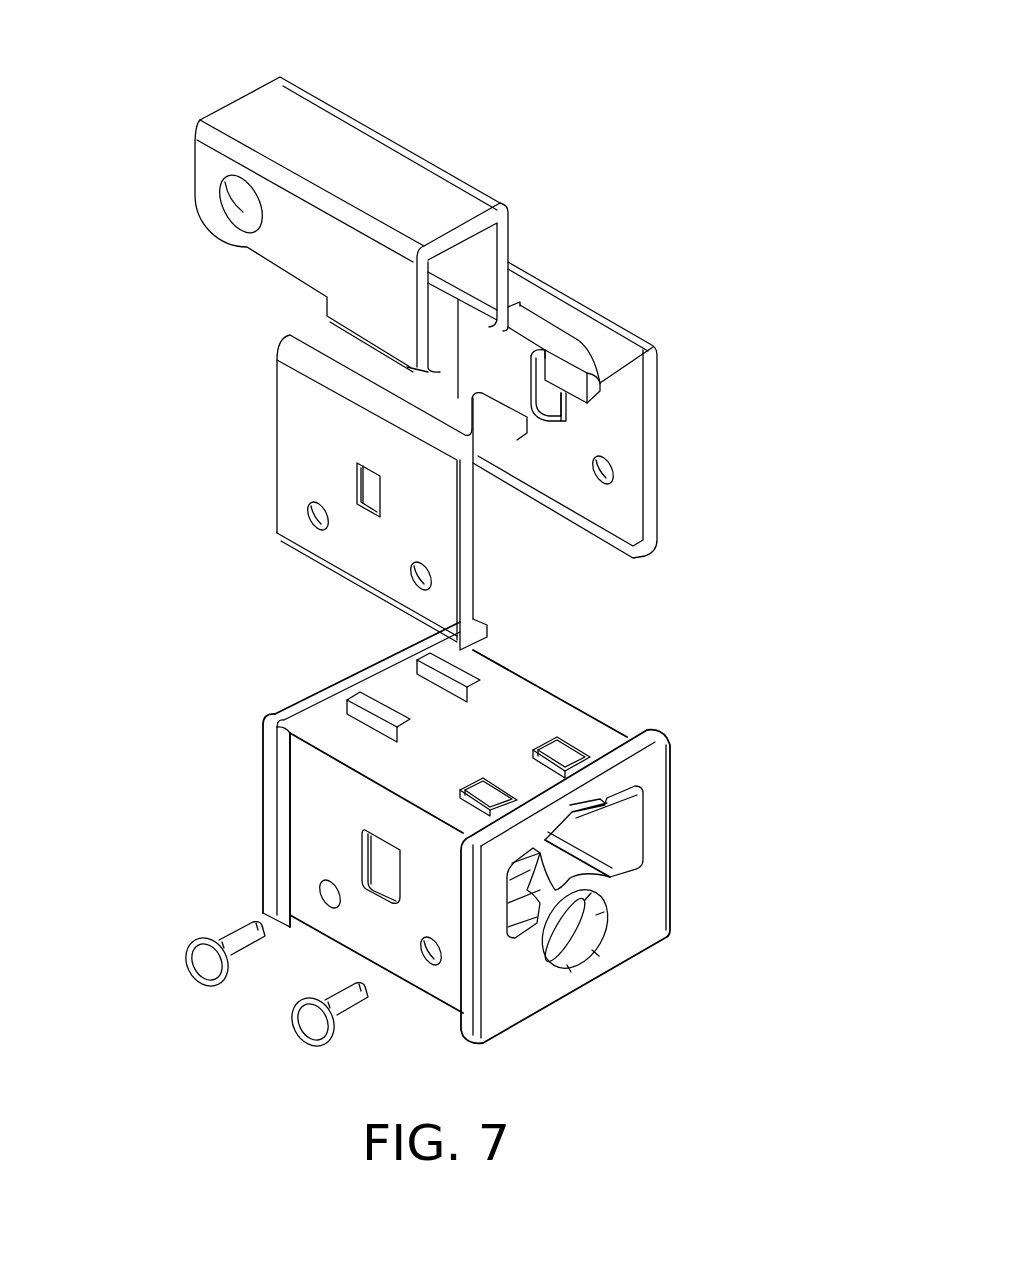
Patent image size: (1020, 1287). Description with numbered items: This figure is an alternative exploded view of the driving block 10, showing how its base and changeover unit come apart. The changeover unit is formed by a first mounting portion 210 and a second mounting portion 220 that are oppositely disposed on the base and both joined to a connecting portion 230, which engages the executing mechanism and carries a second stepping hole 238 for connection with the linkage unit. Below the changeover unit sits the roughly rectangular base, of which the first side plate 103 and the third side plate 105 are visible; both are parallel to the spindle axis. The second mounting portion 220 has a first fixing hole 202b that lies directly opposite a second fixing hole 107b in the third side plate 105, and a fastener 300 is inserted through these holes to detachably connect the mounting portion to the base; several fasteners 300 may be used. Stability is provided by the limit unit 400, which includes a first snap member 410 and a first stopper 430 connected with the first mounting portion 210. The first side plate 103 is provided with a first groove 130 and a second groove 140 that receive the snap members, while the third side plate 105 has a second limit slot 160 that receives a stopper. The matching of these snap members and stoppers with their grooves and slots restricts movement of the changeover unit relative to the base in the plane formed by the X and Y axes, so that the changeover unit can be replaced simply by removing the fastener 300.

The driving block 10 is at (565, 74).
The connecting portion 230 is at (342, 109).
The second stepping hole 238 is at (248, 208).
The first mounting portion 210 is at (540, 287).
The second mounting portion 220 is at (275, 412).
The limit unit 400 is at (741, 413).
The first snap member 410 is at (604, 393).
The first stopper 430 is at (568, 420).
The first fixing hole 202b is at (313, 517).
The first side plate 103 is at (540, 722).
The third side plate 105 is at (310, 790).
The first groove 130 is at (343, 715).
The second groove 140 is at (455, 684).
The second limit slot 160 is at (368, 862).
The second fixing hole 107b is at (432, 955).
The fastener 300 is at (188, 962).